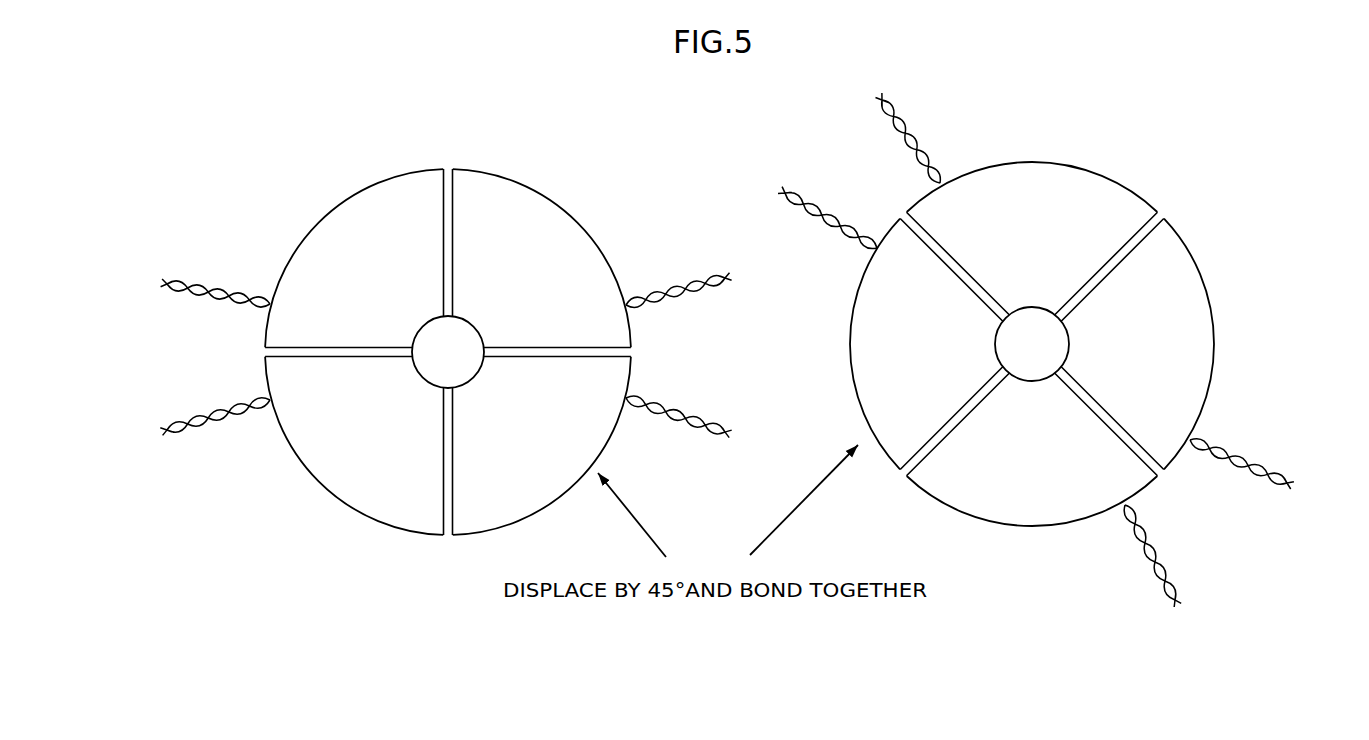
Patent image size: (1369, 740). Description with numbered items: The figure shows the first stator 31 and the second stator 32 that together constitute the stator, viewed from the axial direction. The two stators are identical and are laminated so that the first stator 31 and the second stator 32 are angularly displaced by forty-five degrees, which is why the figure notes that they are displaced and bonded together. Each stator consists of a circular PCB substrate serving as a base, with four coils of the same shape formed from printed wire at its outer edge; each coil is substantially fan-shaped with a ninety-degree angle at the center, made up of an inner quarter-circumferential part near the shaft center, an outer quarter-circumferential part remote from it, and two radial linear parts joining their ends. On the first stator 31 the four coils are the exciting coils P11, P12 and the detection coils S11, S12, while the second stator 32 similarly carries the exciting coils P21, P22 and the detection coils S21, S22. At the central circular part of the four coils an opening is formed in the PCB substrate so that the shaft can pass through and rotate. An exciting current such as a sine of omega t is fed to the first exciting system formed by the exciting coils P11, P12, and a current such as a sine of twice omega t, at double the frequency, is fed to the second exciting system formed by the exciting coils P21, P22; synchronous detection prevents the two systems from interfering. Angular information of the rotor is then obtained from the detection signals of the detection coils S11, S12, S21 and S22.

The first stator 31 is at (502, 163).
The second stator 32 is at (1137, 162).
The detection coil S11 is at (213, 277).
The exciting coil P11 is at (217, 431).
The exciting coil P12 is at (705, 275).
The detection coil S12 is at (686, 416).
The detection coil S21 is at (895, 126).
The exciting coil P21 is at (804, 204).
The exciting coil P22 is at (1266, 485).
The detection coil S22 is at (1165, 571).